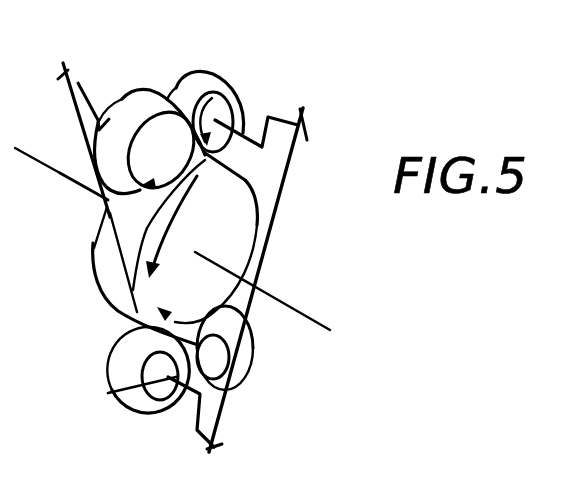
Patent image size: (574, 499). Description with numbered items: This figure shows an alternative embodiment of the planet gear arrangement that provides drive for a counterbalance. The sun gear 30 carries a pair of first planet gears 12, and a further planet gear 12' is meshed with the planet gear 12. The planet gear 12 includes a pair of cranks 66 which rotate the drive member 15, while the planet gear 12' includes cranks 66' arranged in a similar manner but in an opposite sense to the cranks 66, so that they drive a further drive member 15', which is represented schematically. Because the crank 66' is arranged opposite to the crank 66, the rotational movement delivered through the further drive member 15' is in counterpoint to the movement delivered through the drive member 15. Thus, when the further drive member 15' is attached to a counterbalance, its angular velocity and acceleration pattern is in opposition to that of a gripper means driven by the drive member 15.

The first planet gear 12 is at (197, 213).
The further planet gear 12' is at (160, 229).
The drive member 15 is at (61, 189).
The further drive member 15' is at (274, 289).
The sun gear 30 is at (248, 210).
The cranks 66 is at (87, 116).
The cranks 66' is at (270, 257).